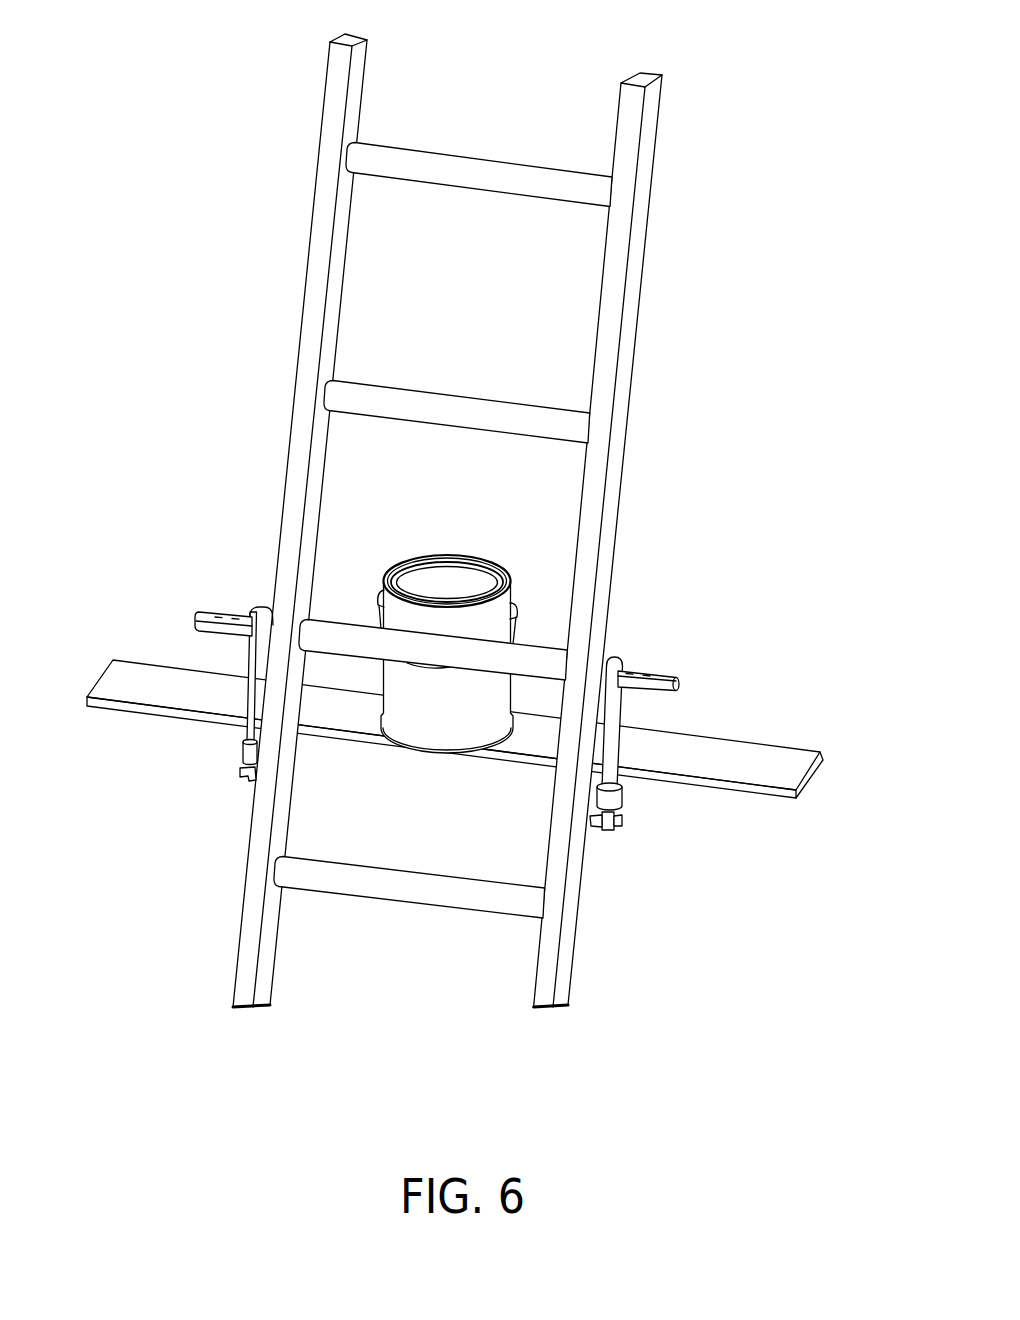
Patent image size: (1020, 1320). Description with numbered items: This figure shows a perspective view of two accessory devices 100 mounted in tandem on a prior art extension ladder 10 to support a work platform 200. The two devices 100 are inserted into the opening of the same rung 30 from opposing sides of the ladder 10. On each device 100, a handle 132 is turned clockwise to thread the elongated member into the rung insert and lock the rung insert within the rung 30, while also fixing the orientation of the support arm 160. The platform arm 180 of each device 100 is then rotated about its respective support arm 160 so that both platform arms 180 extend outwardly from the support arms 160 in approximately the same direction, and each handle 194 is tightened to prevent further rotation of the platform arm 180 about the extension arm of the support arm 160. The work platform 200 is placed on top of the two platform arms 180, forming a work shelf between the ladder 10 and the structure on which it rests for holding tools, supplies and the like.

The extension ladder 10 is at (305, 289).
The rung 30 is at (543, 647).
The accessory device 100 is at (434, 696).
The handle 132 is at (197, 613).
The support arm 160 is at (249, 663).
The platform arm 180 is at (241, 751).
The handle 194 is at (240, 773).
The work platform 200 is at (763, 797).